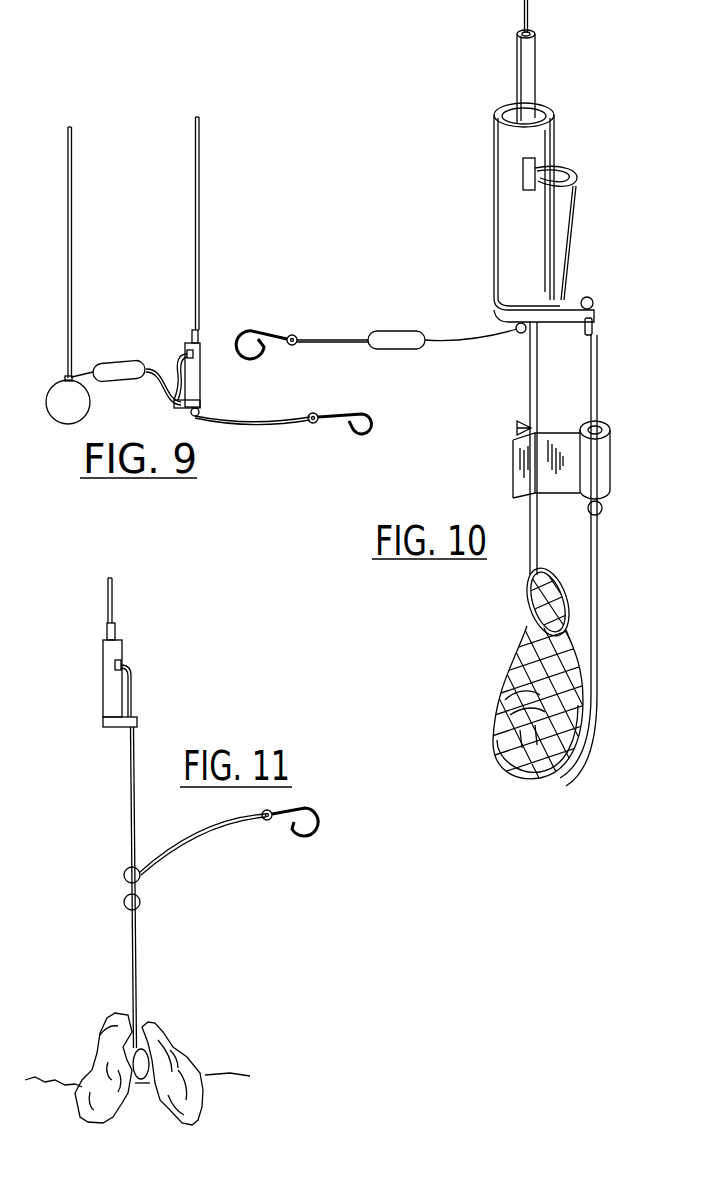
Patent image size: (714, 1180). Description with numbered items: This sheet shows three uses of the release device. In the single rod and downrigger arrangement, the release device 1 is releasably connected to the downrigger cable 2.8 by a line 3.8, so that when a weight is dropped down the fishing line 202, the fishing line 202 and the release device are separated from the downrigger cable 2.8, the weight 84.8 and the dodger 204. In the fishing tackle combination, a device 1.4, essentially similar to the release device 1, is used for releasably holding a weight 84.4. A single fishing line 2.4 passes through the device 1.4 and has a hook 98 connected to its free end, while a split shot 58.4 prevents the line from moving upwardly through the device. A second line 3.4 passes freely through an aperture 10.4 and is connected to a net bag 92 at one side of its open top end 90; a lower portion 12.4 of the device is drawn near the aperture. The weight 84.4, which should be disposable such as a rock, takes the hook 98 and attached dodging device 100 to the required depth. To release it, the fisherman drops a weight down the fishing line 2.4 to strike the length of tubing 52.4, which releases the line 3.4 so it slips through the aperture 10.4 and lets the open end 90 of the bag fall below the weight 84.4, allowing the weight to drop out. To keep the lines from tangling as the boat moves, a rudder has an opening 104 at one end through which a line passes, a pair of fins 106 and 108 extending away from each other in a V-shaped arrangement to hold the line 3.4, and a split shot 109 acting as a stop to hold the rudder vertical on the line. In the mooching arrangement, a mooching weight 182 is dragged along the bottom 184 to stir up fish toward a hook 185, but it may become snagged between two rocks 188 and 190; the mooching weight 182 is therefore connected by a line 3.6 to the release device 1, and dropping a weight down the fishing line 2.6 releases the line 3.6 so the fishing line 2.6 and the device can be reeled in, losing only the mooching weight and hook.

In FIG. 9, the release device 1 is at (201, 387).
In FIG. 11, the release device 1 is at (107, 703).
In FIG. 10, the device 1.4 is at (624, 214).
In FIG. 10, the fishing line 2.4 is at (531, 26).
In FIG. 11, the fishing line 2.6 is at (113, 600).
In FIG. 9, the downrigger cable 2.8 is at (73, 233).
In FIG. 10, the second line 3.4 is at (530, 395).
In FIG. 11, the line 3.6 is at (128, 802).
In FIG. 9, the line 3.8 is at (157, 391).
In FIG. 10, the aperture 10.4 is at (566, 307).
In FIG. 10, the tab 12.4 is at (594, 320).
In FIG. 10, the length of tubing 52.4 is at (525, 83).
In FIG. 10, the split shot 58.4 is at (519, 335).
In FIG. 10, the weight 84.4 is at (599, 662).
In FIG. 9, the weight 84.8 is at (66, 413).
In FIG. 10, the open top end 90 is at (537, 595).
In FIG. 10, the net bag 92 is at (523, 662).
In FIG. 9, the hook 98 is at (245, 330).
In FIG. 9, the dodging device 100 is at (380, 333).
In FIG. 10, the opening 104 is at (587, 428).
In FIG. 10, the fin 106 is at (520, 458).
In FIG. 10, the fin 108 is at (517, 430).
In FIG. 10, the split shot 109 is at (603, 510).
In FIG. 11, the mooching weight 182 is at (145, 1068).
In FIG. 11, the bottom 184 is at (230, 1071).
In FIG. 11, the hook 185 is at (300, 837).
In FIG. 11, the rock 188 is at (103, 1028).
In FIG. 11, the rock 190 is at (160, 1037).
In FIG. 9, the fishing line 202 is at (196, 224).
In FIG. 9, the dodger 204 is at (108, 366).